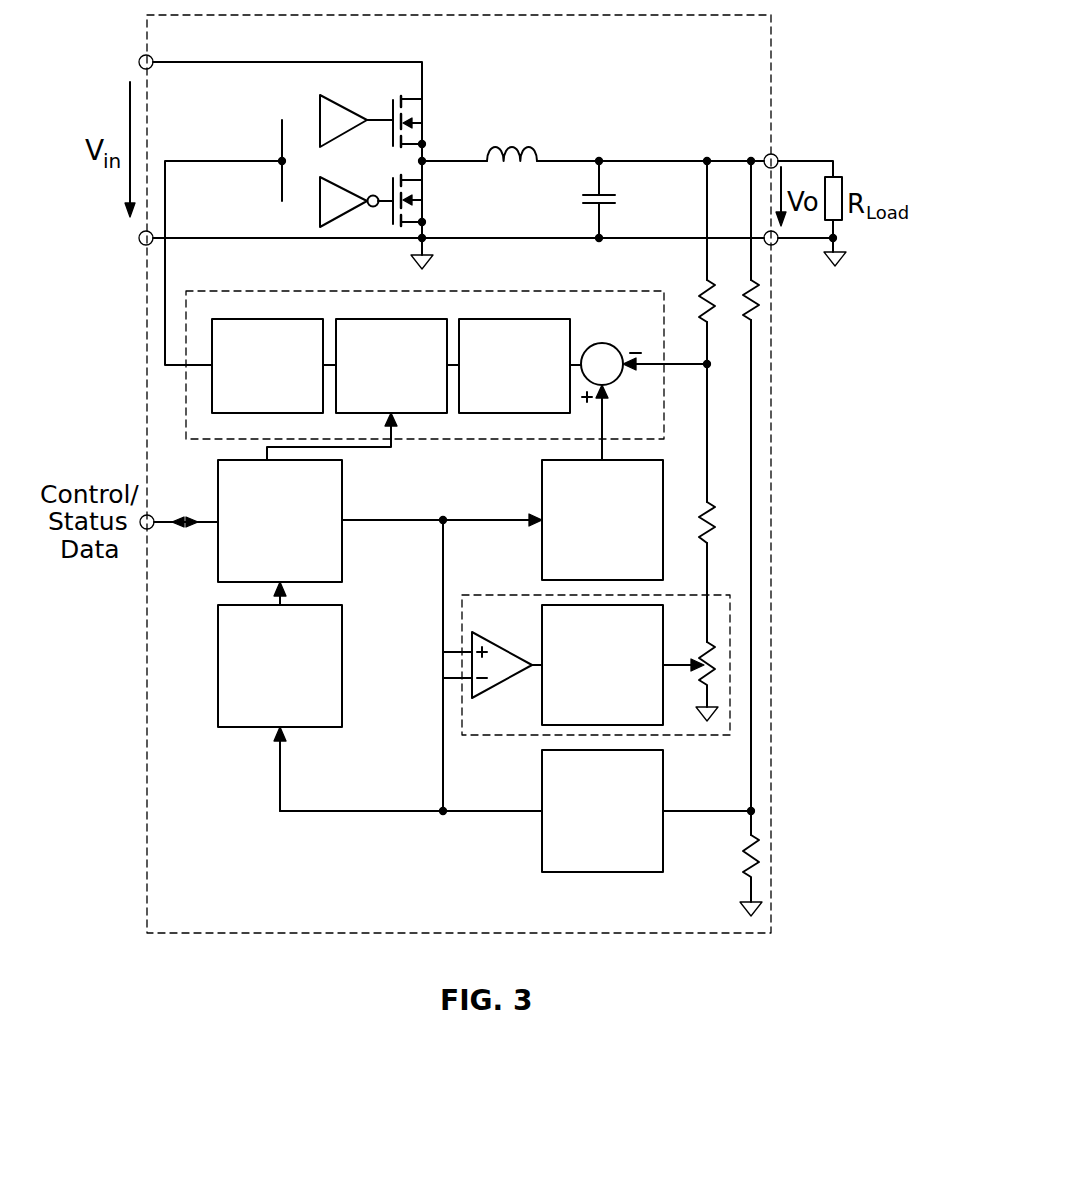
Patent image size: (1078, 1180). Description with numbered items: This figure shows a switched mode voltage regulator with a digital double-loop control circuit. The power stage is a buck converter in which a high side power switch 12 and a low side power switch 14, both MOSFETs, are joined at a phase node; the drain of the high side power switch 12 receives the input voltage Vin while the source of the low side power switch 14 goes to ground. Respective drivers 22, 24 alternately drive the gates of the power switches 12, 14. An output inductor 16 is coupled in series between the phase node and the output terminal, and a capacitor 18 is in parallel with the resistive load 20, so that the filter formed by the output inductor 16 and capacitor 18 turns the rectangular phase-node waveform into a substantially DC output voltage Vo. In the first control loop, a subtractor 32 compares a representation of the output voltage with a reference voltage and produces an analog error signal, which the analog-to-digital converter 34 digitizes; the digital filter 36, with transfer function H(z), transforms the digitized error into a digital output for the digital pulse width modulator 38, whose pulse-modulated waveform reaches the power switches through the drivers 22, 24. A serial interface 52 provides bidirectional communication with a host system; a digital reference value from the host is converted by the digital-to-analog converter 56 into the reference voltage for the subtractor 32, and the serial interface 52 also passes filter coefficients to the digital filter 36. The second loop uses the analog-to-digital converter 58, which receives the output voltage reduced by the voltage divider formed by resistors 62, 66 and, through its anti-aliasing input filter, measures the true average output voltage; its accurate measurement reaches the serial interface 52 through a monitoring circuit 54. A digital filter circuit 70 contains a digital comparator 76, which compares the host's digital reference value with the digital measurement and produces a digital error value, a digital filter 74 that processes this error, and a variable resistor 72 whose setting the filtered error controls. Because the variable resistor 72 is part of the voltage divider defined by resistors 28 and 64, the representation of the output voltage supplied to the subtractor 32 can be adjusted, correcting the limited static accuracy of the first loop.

The high side power switch 12 is at (425, 108).
The low side power switch 14 is at (425, 192).
The output inductor 16 is at (512, 143).
The capacitor 18 is at (618, 199).
The resistive load 20 is at (833, 177).
The driver 22 is at (338, 97).
The driver 24 is at (338, 179).
The resistor 28 is at (707, 300).
The subtractor 32 is at (601, 343).
The analog-to-digital converter 34 is at (514, 319).
The digital filter 36 is at (390, 319).
The digital pulse width modulator 38 is at (266, 319).
The serial interface 52 is at (342, 492).
The monitoring circuit 54 is at (218, 668).
The digital-to-analog converter 56 is at (542, 492).
The analog-to-digital converter 58 is at (542, 777).
The resistor 62 is at (751, 852).
The resistor 64 is at (707, 520).
The resistor 66 is at (751, 312).
The digital filter circuit 70 is at (586, 648).
The variable resistor 72 is at (710, 658).
The digital filter 74 is at (542, 632).
The digital comparator 76 is at (474, 697).